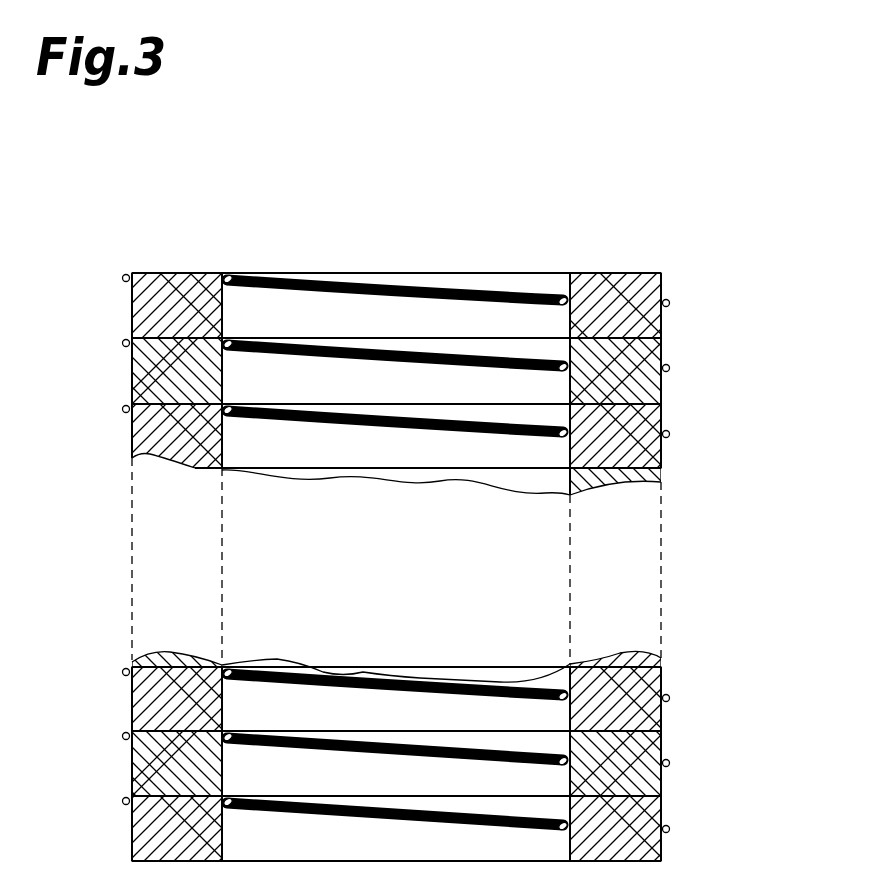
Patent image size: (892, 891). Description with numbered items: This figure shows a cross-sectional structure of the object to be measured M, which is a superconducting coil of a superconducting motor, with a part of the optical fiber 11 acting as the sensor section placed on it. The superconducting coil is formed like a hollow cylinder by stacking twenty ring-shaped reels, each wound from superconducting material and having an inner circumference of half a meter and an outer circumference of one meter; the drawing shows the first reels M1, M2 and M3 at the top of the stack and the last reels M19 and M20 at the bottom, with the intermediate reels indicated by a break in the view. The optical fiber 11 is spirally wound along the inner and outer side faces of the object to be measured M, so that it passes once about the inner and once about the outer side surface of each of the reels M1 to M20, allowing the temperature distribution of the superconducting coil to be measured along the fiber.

The optical fiber 11 is at (452, 293).
The reel M1 is at (661, 285).
The reel M2 is at (661, 352).
The reel M3 is at (661, 418).
The reel M19 is at (661, 750).
The reel M20 is at (661, 816).
The object to be measured M is at (786, 835).